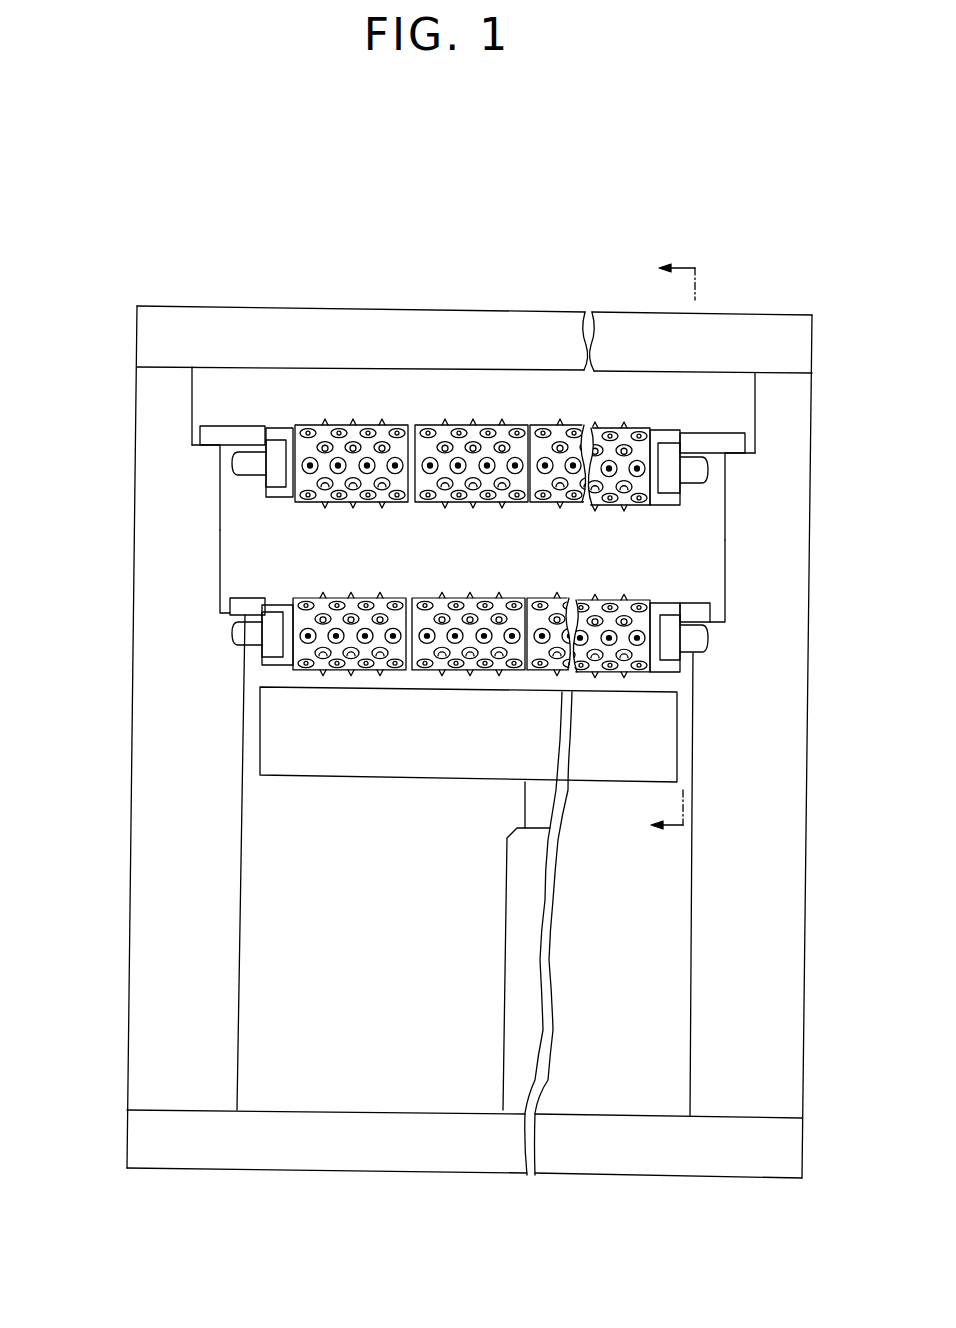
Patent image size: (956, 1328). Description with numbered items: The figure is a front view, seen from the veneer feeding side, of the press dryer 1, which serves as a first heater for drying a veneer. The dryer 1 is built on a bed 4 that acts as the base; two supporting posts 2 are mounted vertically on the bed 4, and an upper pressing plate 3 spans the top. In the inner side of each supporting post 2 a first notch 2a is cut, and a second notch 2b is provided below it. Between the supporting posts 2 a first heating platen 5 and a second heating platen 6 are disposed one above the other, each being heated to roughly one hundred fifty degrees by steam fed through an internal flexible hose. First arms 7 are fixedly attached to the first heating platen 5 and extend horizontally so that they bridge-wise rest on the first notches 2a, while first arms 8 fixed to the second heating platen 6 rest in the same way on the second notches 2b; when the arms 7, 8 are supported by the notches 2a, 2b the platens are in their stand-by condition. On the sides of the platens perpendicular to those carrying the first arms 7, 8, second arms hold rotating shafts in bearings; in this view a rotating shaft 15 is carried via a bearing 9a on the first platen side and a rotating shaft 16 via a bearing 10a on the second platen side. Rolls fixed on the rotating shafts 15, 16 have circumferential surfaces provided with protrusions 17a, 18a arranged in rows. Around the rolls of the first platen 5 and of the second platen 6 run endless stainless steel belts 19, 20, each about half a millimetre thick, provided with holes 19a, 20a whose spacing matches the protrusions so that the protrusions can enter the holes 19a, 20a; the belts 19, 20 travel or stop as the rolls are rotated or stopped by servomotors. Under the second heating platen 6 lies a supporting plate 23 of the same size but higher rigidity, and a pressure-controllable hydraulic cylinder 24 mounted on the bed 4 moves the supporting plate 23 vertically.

The press dryer 1 is at (400, 288).
The supporting post 2 is at (150, 531).
The first notch 2a is at (210, 449).
The second notch 2b is at (227, 618).
The upper pressing plate 3 is at (446, 310).
The bed 4 is at (290, 1152).
The first heating platen 5 is at (285, 440).
The second heating platen 6 is at (287, 655).
The first arm 7 is at (210, 427).
The first arm 8 is at (245, 600).
The bearing 9a is at (275, 445).
The bearing 10a is at (272, 640).
The rotating shaft 15 is at (697, 467).
The rotating shaft 16 is at (700, 637).
The protrusion 17a is at (437, 483).
The protrusion 18a is at (495, 620).
The belt 19 is at (455, 425).
The hole 19a is at (553, 428).
The belt 20 is at (535, 653).
The hole 20a is at (440, 622).
The supporting plate 23 is at (607, 758).
The hydraulic cylinder 24 is at (513, 1020).